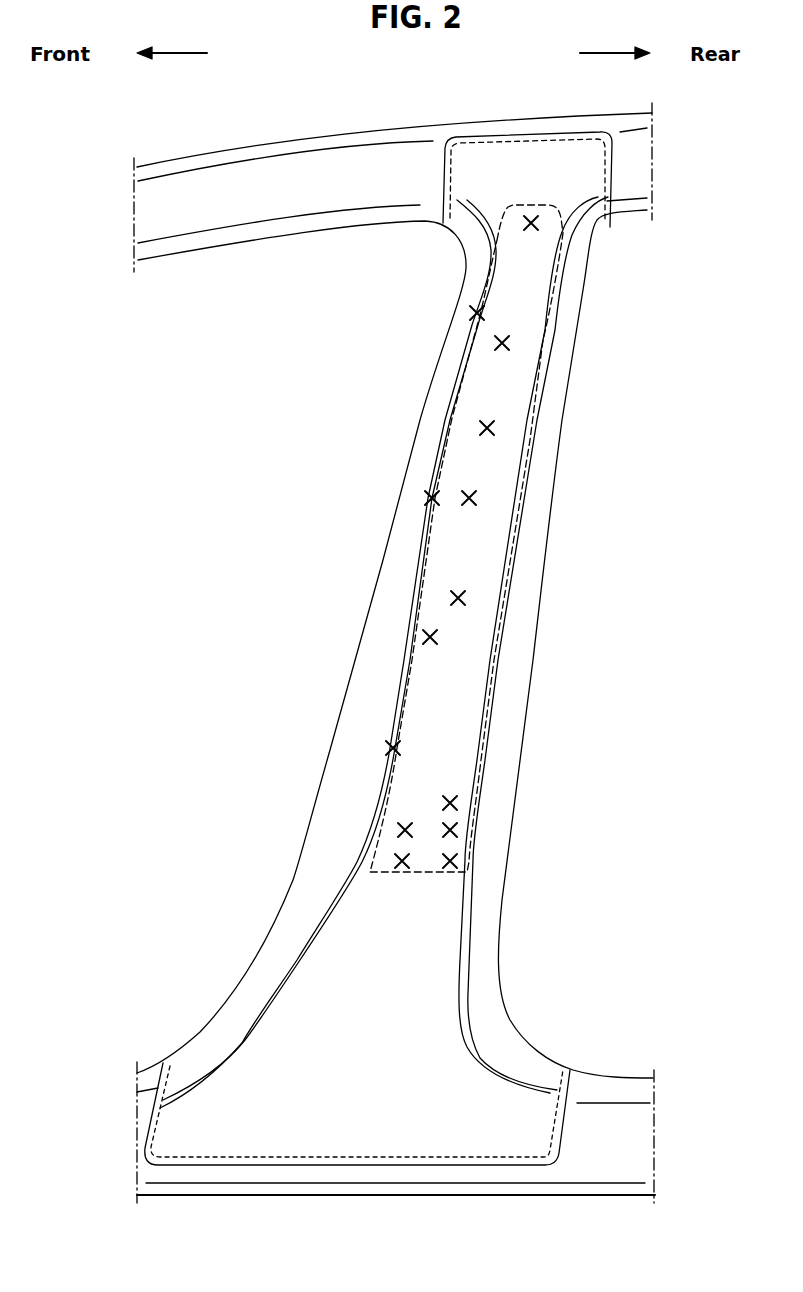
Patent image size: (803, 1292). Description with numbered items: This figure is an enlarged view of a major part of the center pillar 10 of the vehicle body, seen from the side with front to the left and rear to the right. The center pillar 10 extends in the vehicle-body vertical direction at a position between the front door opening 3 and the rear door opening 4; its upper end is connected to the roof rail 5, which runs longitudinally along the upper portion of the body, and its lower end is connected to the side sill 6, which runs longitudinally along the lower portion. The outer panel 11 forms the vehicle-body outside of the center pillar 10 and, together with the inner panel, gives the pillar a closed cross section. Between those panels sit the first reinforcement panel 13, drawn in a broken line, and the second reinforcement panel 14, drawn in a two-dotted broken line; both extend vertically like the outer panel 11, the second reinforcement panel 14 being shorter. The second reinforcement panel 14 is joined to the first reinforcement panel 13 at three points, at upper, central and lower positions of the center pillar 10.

The front door opening 3 is at (226, 514).
The rear door opening 4 is at (711, 514).
The roof rail 5 is at (331, 136).
The side sill 6 is at (349, 1186).
The center pillar 10 is at (500, 930).
The outer panel 11 is at (440, 963).
The first reinforcement panel 13 is at (565, 1080).
The second reinforcement panel 14 is at (398, 872).